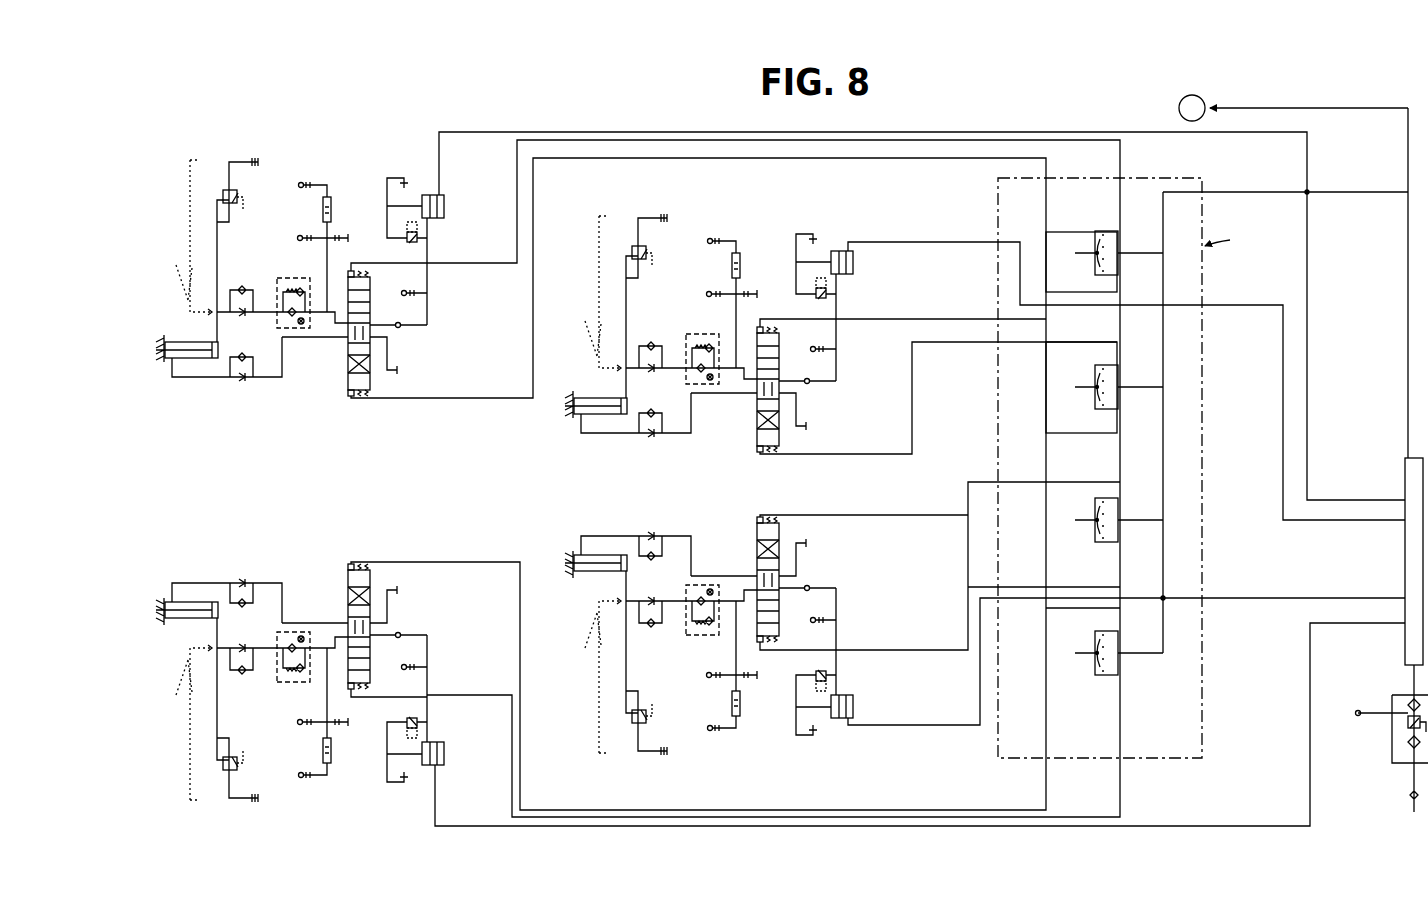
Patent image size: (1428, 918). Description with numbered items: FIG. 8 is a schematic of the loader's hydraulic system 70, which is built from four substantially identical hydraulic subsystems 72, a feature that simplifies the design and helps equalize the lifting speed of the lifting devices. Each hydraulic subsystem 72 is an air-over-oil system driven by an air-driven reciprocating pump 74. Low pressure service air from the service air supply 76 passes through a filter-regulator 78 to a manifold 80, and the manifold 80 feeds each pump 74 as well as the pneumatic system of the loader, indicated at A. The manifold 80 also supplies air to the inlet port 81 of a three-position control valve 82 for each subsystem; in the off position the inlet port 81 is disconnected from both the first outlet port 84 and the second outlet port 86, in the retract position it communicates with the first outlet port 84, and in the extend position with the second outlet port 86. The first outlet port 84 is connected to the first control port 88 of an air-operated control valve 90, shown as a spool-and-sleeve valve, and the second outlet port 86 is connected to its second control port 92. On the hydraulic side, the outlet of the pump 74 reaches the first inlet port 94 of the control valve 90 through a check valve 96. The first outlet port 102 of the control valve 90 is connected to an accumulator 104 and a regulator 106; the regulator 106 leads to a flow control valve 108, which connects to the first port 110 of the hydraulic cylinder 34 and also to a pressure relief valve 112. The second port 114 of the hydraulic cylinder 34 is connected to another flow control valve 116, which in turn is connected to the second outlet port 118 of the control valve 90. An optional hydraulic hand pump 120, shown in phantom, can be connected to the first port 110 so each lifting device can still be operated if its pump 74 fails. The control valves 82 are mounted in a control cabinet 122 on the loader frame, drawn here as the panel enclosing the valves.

The hydraulic cylinder 34 is at (190, 360).
The hydraulic system 70 is at (505, 44).
The hydraulic subsystem 72 is at (309, 112).
The air-driven reciprocating pump 74 is at (445, 206).
The service air supply 76 is at (1408, 775).
The filter-regulator 78 is at (1392, 742).
The manifold 80 is at (1405, 558).
The inlet port 81 is at (1119, 250).
The control valve 82 is at (1222, 410).
The first outlet port 84 is at (1112, 230).
The second outlet port 86 is at (1108, 277).
The first control port 88 is at (326, 359).
The air-operated control valve 90 is at (373, 376).
The second control port 92 is at (351, 270).
The first inlet port 94 is at (402, 293).
The check valve 96 is at (401, 327).
The first outlet port 102 is at (348, 330).
The accumulator 104 is at (333, 190).
The regulator 106 is at (276, 276).
The flow control valve 108 is at (242, 318).
The first port 110 is at (216, 340).
The pressure relief valve 112 is at (222, 190).
The second port 114 is at (172, 360).
The flow control valve 116 is at (248, 382).
The second outlet port 118 is at (348, 337).
The hydraulic hand pump 120 is at (187, 262).
The control cabinet 122 is at (1207, 373).